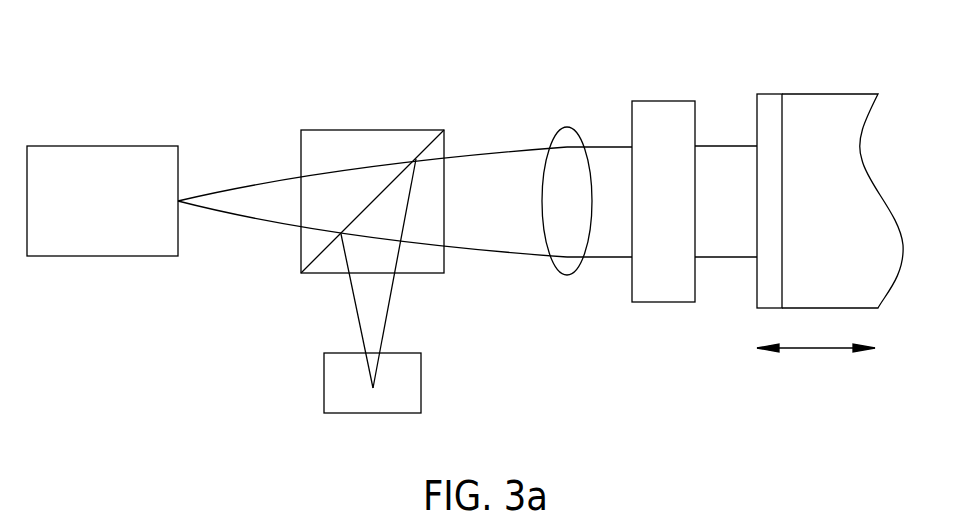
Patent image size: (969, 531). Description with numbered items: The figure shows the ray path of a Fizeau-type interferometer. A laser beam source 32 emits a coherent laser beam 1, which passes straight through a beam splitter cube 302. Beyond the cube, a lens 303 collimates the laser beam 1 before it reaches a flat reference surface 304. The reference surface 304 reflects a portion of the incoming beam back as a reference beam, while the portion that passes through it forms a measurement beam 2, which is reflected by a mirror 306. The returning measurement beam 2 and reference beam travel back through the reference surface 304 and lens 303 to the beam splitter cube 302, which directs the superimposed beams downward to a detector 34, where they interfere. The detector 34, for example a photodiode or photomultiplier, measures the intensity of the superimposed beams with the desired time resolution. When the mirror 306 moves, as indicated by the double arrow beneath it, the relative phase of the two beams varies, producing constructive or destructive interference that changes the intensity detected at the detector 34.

The laser beam source 32 is at (101, 146).
The laser beam 1 is at (263, 185).
The beam splitter cube 302 is at (343, 130).
The detector 34 is at (324, 382).
The lens 303 is at (565, 127).
The flat reference surface 304 is at (658, 302).
The measurement beam 2 is at (730, 143).
The mirror 306 is at (772, 108).